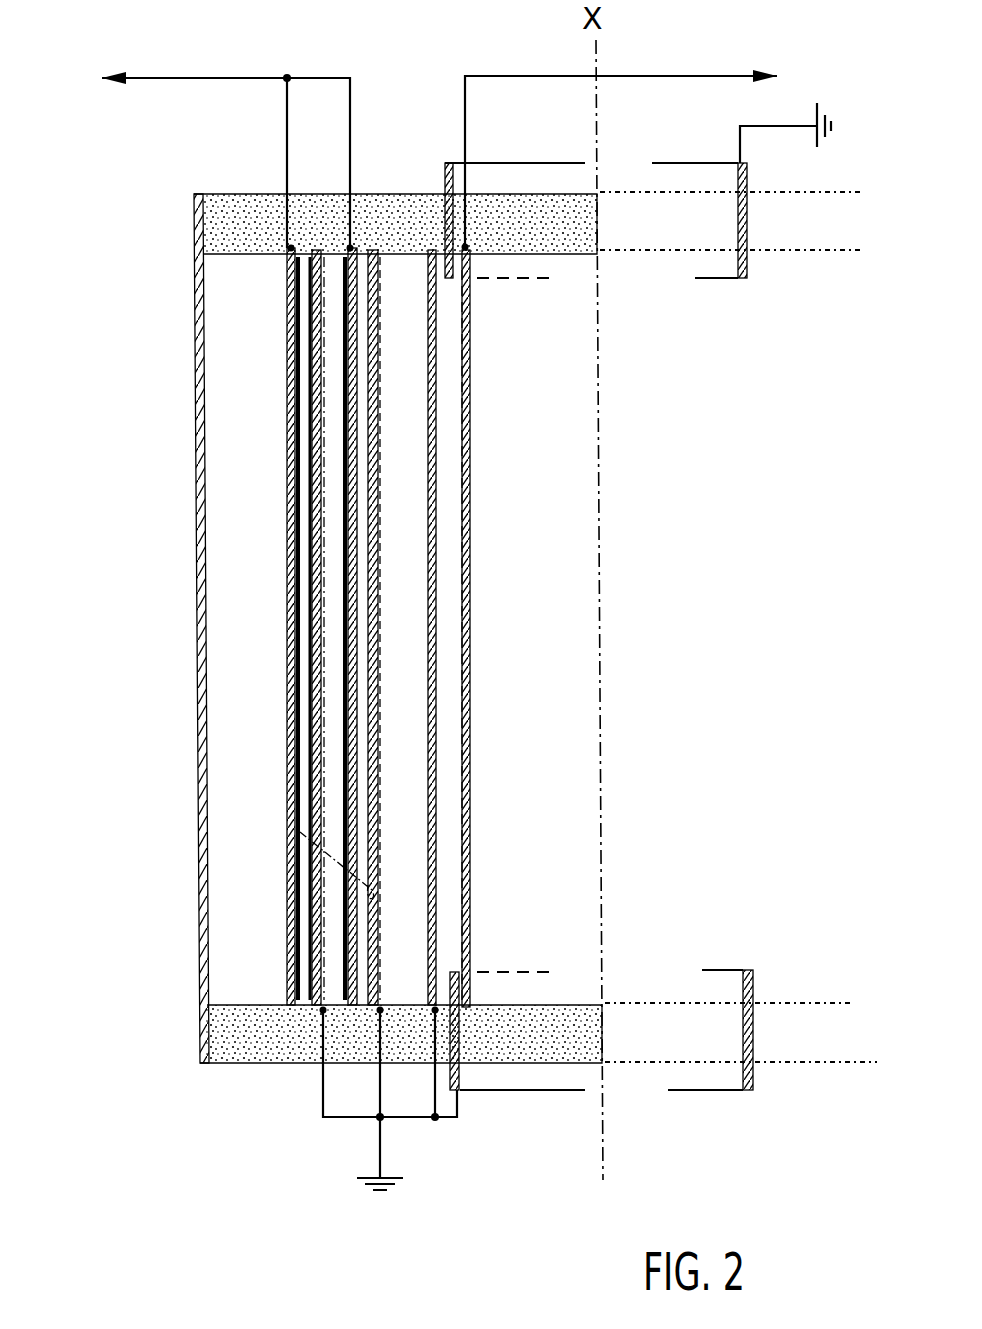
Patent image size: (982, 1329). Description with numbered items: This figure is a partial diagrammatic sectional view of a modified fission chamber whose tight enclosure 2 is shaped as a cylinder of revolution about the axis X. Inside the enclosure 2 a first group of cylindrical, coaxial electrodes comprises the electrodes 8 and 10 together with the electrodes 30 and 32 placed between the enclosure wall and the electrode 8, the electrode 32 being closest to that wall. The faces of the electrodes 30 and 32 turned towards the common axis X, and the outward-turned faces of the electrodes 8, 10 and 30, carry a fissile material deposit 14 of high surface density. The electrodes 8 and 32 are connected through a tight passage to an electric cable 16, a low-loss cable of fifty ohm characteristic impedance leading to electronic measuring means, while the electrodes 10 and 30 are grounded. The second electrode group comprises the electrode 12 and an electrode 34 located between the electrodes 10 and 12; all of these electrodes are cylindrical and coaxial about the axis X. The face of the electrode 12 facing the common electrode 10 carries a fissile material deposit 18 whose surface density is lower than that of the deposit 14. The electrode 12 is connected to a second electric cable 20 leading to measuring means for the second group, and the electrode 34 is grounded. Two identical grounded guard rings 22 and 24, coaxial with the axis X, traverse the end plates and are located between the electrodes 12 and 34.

The tight enclosure 2 is at (198, 395).
The electrode 8 is at (347, 375).
The electrode 10 is at (372, 463).
The electrode 12 is at (472, 438).
The fissile material deposit 14 is at (300, 832).
The electric cable 16 is at (195, 78).
The fissile material deposit 18 is at (460, 530).
The electric cable 20 is at (735, 72).
The guard ring 22 is at (740, 282).
The guard ring 24 is at (745, 972).
The electrode 30 is at (320, 613).
The electrode 32 is at (292, 728).
The electrode 34 is at (433, 593).